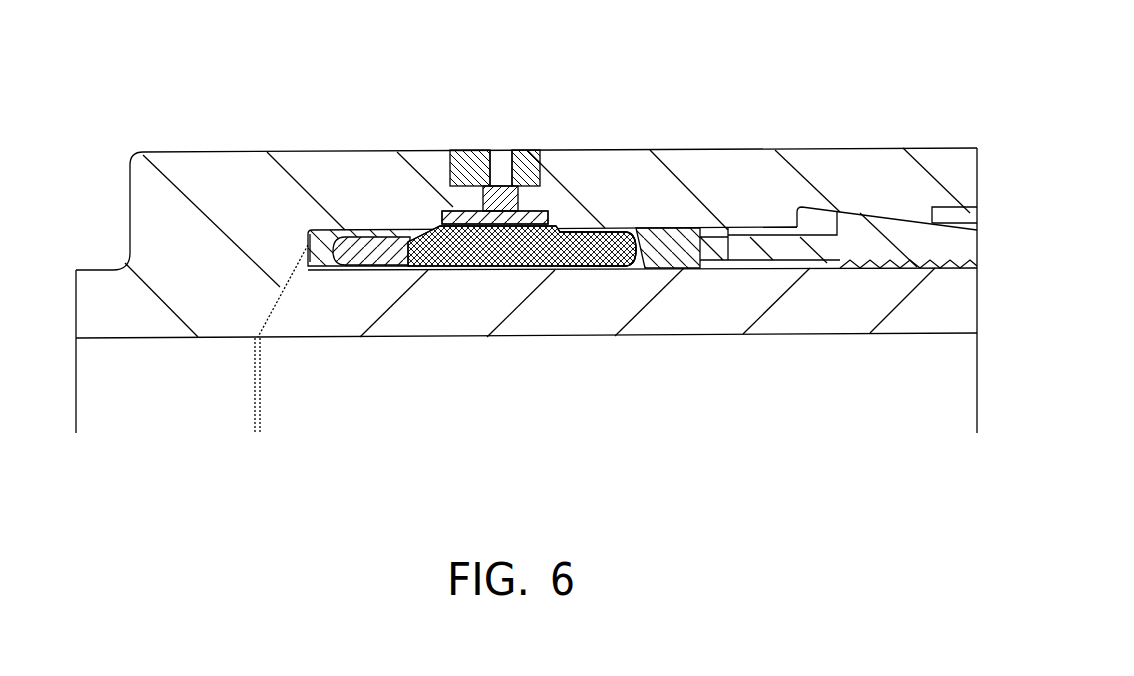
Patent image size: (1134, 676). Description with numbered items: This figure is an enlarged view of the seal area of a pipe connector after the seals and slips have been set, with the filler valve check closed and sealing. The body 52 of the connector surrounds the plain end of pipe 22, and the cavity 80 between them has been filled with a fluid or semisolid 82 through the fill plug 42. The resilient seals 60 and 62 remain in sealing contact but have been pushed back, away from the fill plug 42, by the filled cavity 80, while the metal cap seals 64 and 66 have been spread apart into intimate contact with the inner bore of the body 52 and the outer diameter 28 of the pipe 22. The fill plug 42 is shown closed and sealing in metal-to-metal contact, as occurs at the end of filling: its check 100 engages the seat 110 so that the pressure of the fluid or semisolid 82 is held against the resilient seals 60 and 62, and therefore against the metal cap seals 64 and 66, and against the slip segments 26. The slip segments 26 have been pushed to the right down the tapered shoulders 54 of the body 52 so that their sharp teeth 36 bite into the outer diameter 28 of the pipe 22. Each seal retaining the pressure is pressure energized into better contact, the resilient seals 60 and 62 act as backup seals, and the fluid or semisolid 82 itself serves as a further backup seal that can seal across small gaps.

The plain end of pipe 22 is at (840, 330).
The slip segments 26 is at (848, 242).
The outer diameter 28 is at (760, 270).
The sharp teeth 36 is at (867, 270).
The fill plug 42 is at (518, 195).
The body 52 is at (698, 148).
The tapered shoulders 54 is at (907, 220).
The resilient seal 60 is at (640, 263).
The resilient seal 62 is at (395, 240).
The metal cap seal 64 is at (713, 270).
The metal cap seal 66 is at (320, 265).
The cavity 80 is at (578, 230).
The fluid or semisolid 82 is at (593, 232).
The check 100 is at (500, 245).
The seat 110 is at (540, 208).